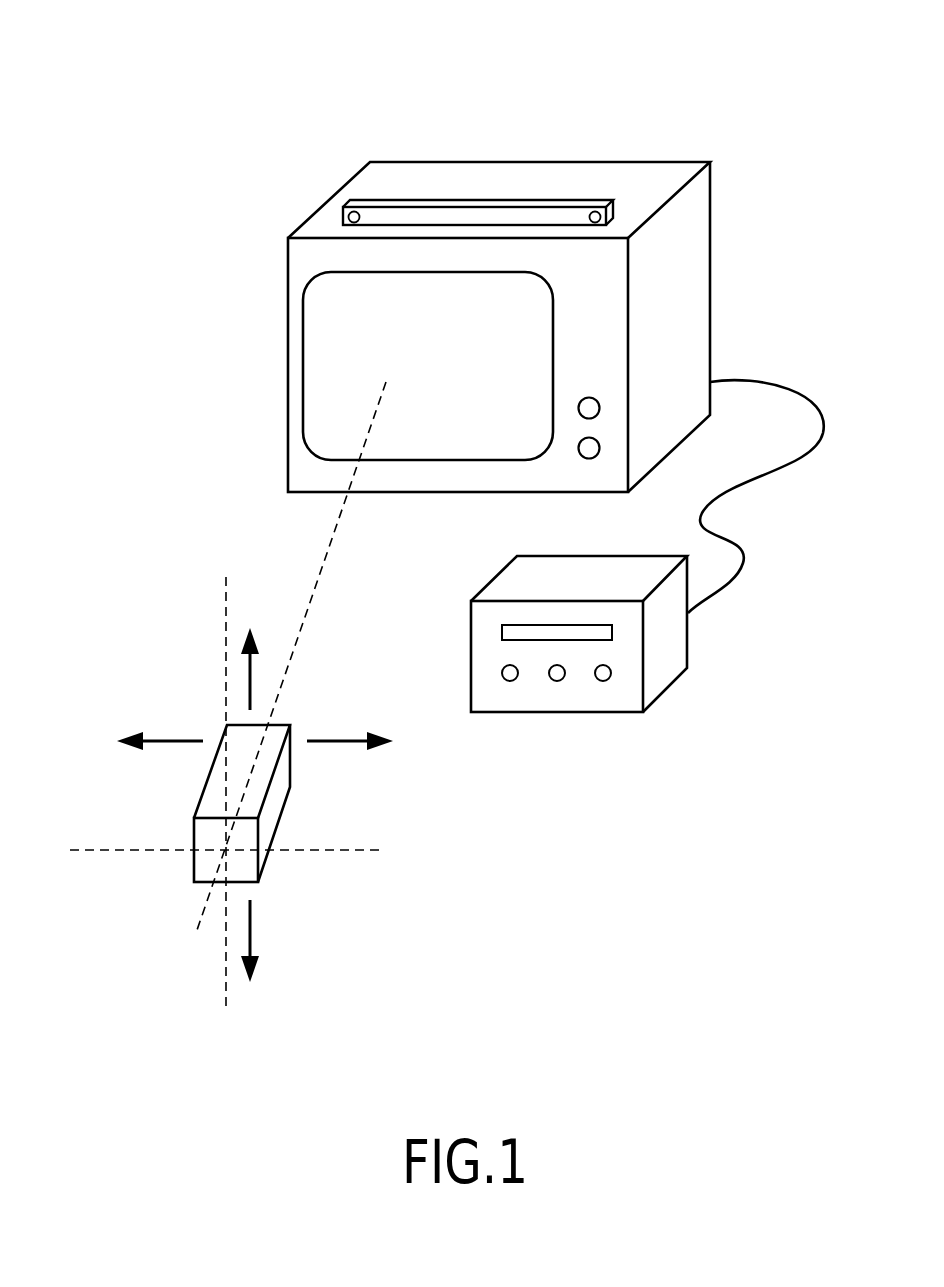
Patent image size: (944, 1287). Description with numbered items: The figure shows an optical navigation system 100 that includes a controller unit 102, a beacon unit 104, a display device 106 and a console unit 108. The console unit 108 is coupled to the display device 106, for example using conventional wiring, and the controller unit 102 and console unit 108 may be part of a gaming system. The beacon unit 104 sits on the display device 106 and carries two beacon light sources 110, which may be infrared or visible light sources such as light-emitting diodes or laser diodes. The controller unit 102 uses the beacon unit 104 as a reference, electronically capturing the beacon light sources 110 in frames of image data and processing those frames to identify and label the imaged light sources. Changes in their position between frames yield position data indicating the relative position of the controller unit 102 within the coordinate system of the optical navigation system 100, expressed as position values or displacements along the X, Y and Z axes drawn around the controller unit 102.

The optical navigation system 100 is at (750, 80).
The controller unit 102 is at (290, 783).
The beacon unit 104 is at (471, 203).
The display device 106 is at (710, 248).
The console unit 108 is at (713, 648).
The beacon light sources 110 is at (348, 216).